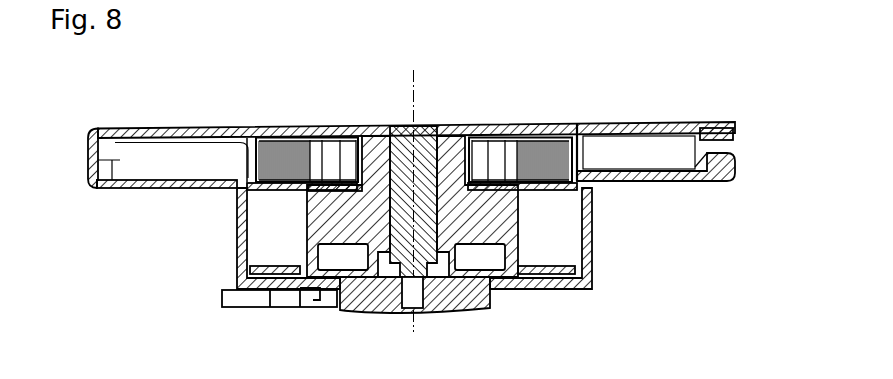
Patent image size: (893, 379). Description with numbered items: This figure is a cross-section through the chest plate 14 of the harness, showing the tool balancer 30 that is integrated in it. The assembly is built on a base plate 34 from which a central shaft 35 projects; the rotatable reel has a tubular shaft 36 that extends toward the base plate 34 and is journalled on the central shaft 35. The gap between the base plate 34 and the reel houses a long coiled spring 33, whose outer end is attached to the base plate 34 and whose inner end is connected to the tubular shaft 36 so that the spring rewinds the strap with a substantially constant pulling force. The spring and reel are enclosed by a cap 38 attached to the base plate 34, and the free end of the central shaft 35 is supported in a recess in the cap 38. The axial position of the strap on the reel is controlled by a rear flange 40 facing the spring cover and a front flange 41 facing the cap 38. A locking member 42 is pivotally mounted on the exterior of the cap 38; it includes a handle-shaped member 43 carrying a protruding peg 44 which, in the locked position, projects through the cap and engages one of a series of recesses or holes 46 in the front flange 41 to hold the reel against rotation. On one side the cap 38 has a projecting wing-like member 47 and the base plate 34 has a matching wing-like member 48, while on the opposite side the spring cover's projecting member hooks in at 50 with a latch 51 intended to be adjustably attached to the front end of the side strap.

The chest plate 14 is at (391, 161).
The tool balancer 30 is at (406, 266).
The coiled spring 33 is at (262, 139).
The base plate 34 is at (386, 128).
The central shaft 35 is at (414, 125).
The tubular shaft 36 is at (396, 217).
The cap 38 is at (552, 279).
The rear flange 40 is at (270, 197).
The front flange 41 is at (277, 264).
The locking member 42 is at (259, 325).
The handle-shaped member 43 is at (278, 300).
The protruding peg 44 is at (313, 296).
The recesses or holes 46 is at (345, 255).
The wing-like member 47 is at (135, 188).
The wing-like member 48 is at (190, 131).
The hook engagement 50 is at (735, 145).
The latch 51 is at (693, 155).